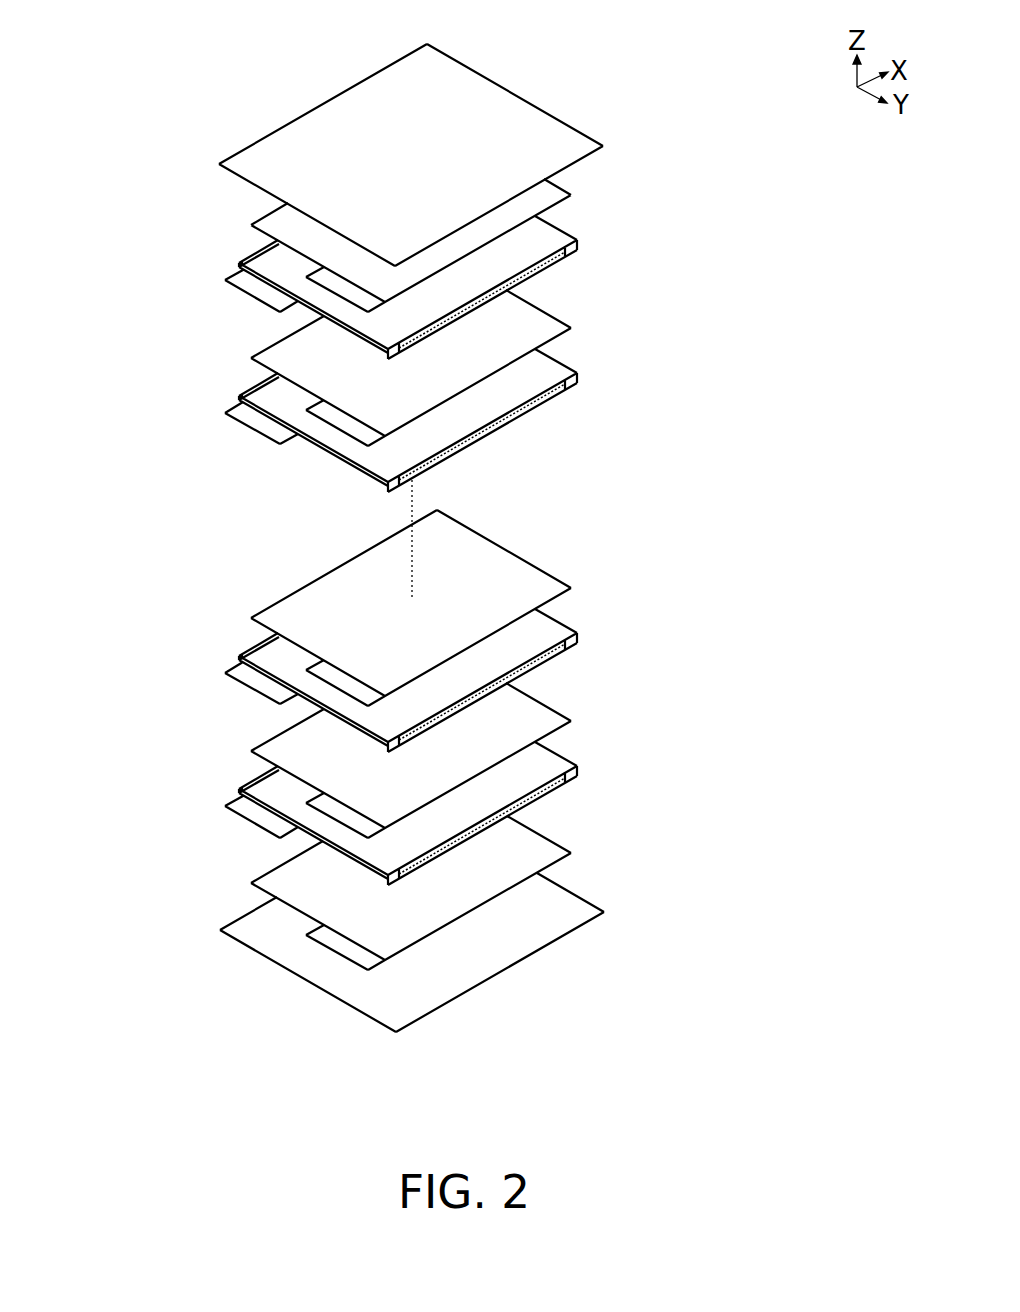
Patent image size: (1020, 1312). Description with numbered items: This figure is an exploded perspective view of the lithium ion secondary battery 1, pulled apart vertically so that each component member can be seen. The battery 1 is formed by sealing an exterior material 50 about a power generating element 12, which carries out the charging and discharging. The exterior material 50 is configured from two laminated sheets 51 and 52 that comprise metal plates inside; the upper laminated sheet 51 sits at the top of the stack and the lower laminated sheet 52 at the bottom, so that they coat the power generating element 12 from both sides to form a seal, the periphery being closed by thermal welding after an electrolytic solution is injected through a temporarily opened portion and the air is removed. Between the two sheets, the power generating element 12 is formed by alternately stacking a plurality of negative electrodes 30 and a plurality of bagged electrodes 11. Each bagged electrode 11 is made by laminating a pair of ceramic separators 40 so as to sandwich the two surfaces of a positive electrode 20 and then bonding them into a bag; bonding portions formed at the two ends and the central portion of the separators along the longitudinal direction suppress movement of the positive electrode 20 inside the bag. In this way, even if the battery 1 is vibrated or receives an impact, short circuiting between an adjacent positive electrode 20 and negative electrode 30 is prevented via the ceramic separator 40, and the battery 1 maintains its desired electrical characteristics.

The lithium ion secondary battery 1 is at (347, 526).
The exterior material 50 is at (584, 93).
The laminated sheet 51 is at (568, 136).
The laminated sheet 52 is at (575, 918).
The power generating element 12 is at (183, 177).
The negative electrode 30 is at (240, 226).
The bagged electrode 11 is at (213, 272).
The ceramic separator 40 is at (307, 448).
The positive electrode 20 is at (248, 437).